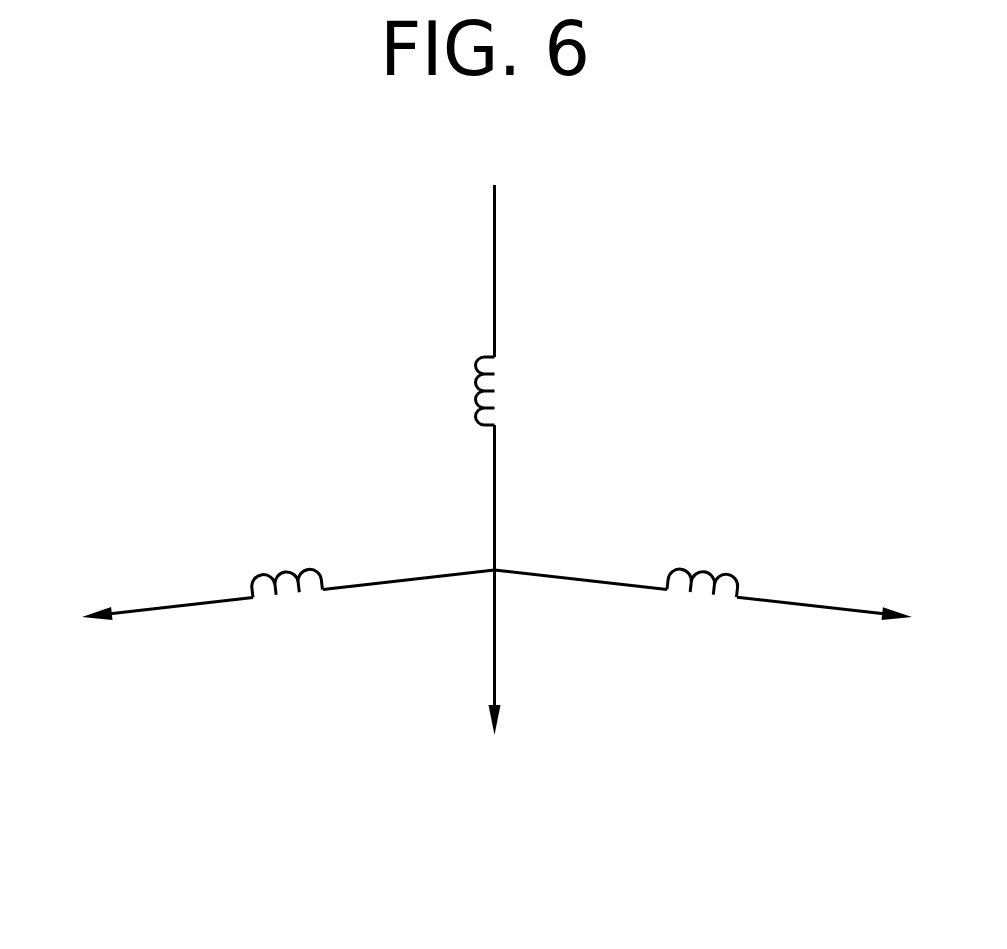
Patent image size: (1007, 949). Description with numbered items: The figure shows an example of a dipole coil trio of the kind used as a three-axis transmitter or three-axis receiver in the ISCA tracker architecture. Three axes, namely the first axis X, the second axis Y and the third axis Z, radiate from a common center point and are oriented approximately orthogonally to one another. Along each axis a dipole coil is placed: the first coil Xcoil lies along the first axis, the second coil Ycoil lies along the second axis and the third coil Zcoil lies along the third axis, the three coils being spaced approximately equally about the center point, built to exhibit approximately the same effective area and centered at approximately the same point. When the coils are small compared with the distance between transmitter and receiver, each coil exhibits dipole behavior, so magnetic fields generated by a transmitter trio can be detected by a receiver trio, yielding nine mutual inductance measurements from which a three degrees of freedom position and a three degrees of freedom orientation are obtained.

The X axis X is at (837, 613).
The Y axis Y is at (150, 614).
The Z axis Z is at (497, 608).
The X coil Xcoil is at (701, 554).
The Y coil Ycoil is at (281, 555).
The Z coil Zcoil is at (436, 391).